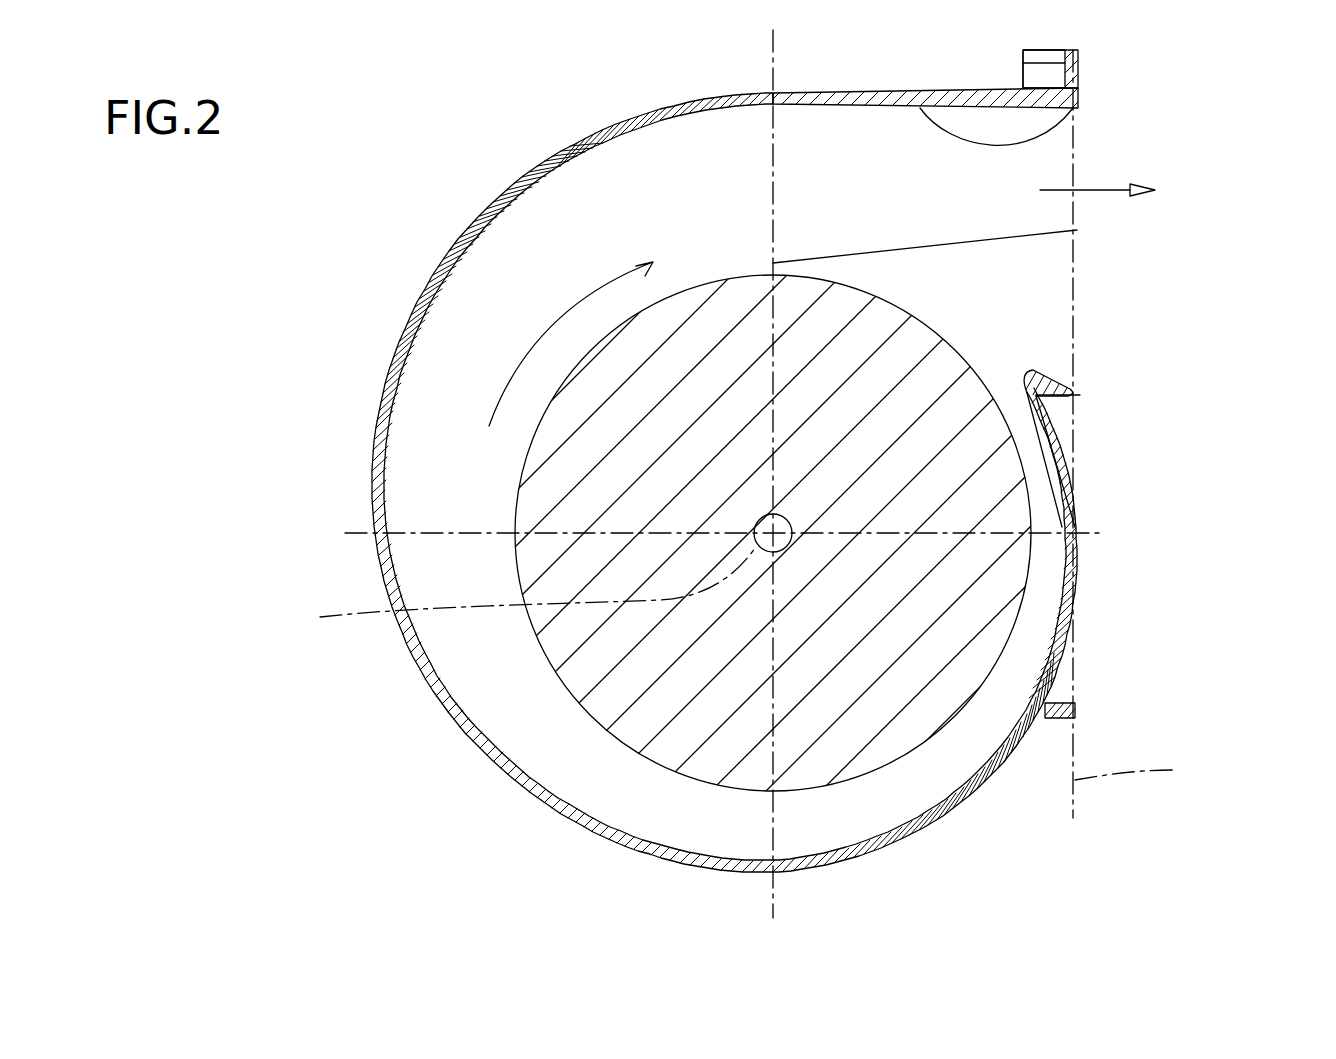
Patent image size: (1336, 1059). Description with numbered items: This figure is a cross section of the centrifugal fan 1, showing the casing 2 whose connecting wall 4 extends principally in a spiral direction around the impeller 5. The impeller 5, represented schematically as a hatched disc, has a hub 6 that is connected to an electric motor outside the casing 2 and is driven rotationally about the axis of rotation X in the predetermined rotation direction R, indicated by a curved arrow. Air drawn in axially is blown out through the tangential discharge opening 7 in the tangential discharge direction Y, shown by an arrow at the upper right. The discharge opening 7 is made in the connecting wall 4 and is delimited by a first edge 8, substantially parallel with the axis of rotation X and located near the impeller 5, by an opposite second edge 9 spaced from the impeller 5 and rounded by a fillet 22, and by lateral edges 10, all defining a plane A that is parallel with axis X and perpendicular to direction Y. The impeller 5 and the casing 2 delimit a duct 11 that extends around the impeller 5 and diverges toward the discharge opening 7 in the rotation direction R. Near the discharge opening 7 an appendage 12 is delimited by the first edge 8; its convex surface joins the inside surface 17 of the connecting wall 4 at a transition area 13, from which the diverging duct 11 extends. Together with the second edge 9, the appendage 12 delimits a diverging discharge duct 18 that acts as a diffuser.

The centrifugal fan 1 is at (437, 182).
The casing 2 is at (440, 256).
The connecting wall 4 is at (388, 350).
The impeller 5 is at (903, 310).
The hub 6 is at (762, 527).
The tangential discharge opening 7 is at (1078, 130).
The first edge 8 is at (1080, 396).
The second edge 9 is at (1080, 100).
The lateral edges 10 is at (1080, 313).
The duct 11 is at (740, 200).
The appendage 12 is at (1068, 366).
The transition area 13 is at (1030, 432).
The inside surface 17 is at (1065, 515).
The diverging discharge duct 18 is at (1057, 243).
The fillet 22 is at (930, 100).
The axis of rotation X is at (524, 586).
The tangential discharge direction Y is at (1110, 190).
The rotation direction R is at (571, 344).
The plane A is at (1138, 767).